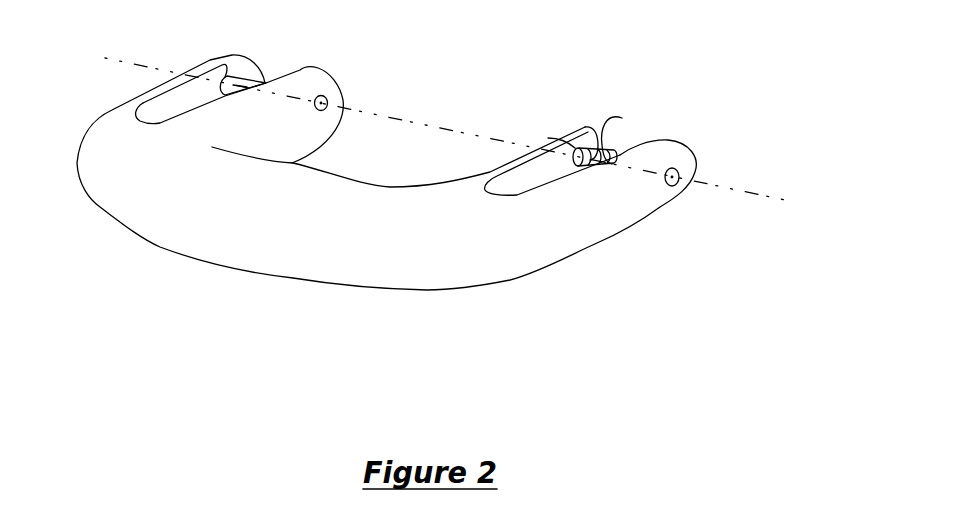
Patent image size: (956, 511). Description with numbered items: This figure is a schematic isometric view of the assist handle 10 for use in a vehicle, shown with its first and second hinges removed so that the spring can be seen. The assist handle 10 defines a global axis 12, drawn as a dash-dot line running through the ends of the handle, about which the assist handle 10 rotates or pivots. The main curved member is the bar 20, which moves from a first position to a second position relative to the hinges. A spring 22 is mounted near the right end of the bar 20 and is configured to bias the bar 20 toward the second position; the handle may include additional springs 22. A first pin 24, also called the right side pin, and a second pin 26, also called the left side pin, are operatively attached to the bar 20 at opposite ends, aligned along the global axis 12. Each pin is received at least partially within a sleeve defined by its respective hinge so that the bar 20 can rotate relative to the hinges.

The assist handle 10 is at (401, 175).
The global axis 12 is at (437, 128).
The bar 20 is at (227, 238).
The spring 22 is at (592, 128).
The first pin 24 is at (573, 158).
The second pin 26 is at (230, 80).